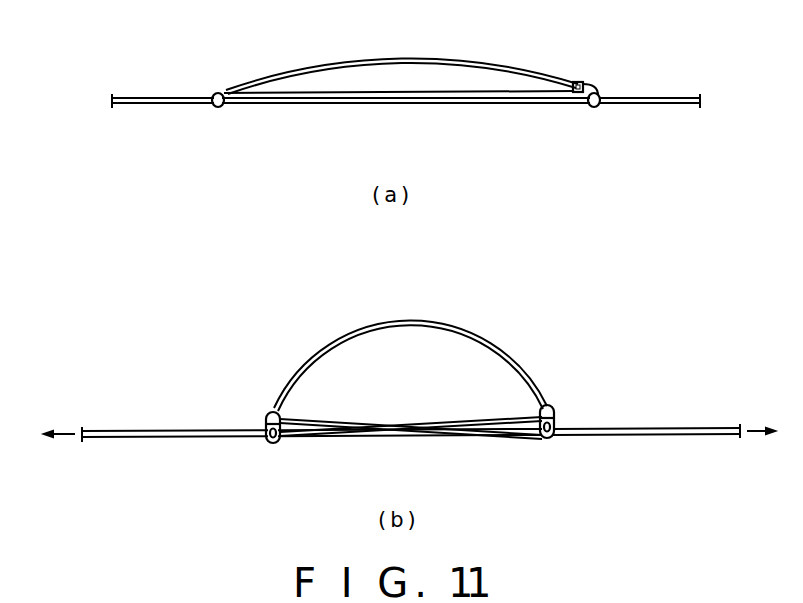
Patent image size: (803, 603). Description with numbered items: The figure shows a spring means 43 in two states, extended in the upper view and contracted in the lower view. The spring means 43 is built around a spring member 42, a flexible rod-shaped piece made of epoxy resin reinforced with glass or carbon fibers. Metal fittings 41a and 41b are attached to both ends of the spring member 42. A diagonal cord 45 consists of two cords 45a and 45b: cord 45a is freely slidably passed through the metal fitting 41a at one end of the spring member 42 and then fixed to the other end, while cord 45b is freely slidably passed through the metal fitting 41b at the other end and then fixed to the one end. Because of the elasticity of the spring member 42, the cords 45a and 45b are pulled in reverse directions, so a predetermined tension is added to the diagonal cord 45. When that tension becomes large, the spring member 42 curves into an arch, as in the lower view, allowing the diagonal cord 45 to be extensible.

The metal fitting 41a is at (599, 91).
The metal fitting 41b is at (221, 92).
The spring member 42 is at (423, 58).
The spring means 43 is at (548, 62).
The diagonal cord 45 is at (683, 95).
The cord 45a is at (561, 106).
The cord 45b is at (236, 106).